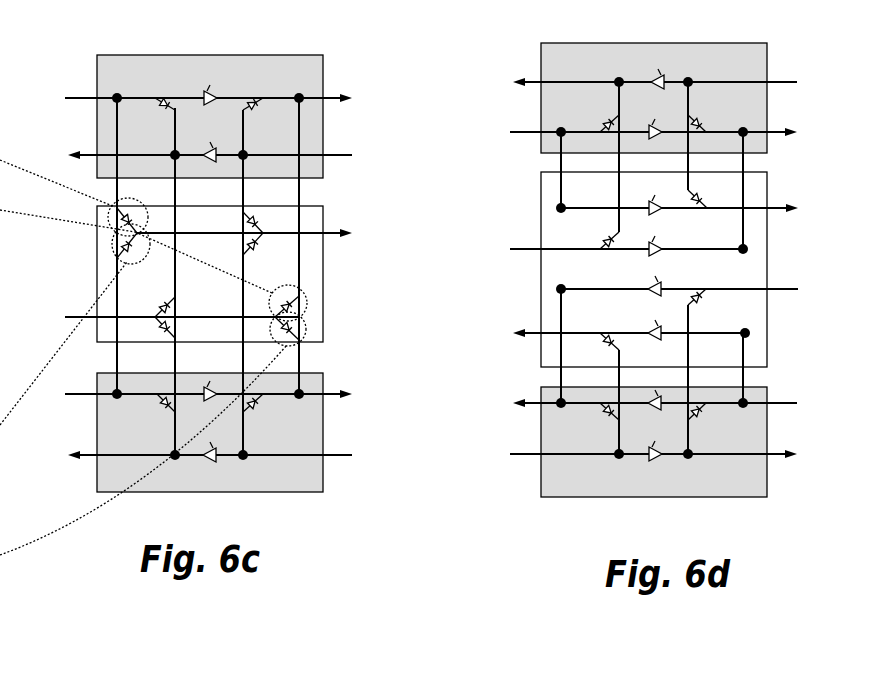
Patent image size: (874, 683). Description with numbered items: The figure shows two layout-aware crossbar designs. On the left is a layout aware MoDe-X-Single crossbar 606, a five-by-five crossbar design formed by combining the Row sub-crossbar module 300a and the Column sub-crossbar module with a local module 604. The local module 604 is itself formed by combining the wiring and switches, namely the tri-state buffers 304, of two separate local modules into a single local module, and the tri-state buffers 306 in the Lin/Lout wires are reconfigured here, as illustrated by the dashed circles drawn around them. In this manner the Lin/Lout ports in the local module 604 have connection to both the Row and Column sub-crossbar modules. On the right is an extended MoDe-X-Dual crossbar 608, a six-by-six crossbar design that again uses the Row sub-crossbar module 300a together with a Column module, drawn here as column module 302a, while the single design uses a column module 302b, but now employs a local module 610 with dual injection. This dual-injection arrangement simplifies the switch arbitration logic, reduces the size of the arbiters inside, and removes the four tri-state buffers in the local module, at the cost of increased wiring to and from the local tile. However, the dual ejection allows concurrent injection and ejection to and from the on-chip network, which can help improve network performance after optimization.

In FIG. 6C, the Row sub-crossbar module 300a is at (219, 278).
In FIG. 6D, the Row sub-crossbar module 300a is at (636, 276).
In FIG. 6D, the column module 302a is at (737, 492).
In FIG. 6C, the column module 302b is at (108, 484).
In FIG. 6D, the tri-state buffers 304 is at (607, 238).
In FIG. 6C, the tri-state buffers 306 is at (217, 457).
In FIG. 6D, the tri-state buffers 306 is at (650, 457).
In FIG. 6C, the local module 604 is at (317, 285).
In FIG. 6C, the layout aware MoDe-X-Single crossbar 606 is at (217, 278).
In FIG. 6D, the extended MoDe-X-Dual crossbar 608 is at (636, 276).
In FIG. 6D, the local module 610 is at (763, 307).